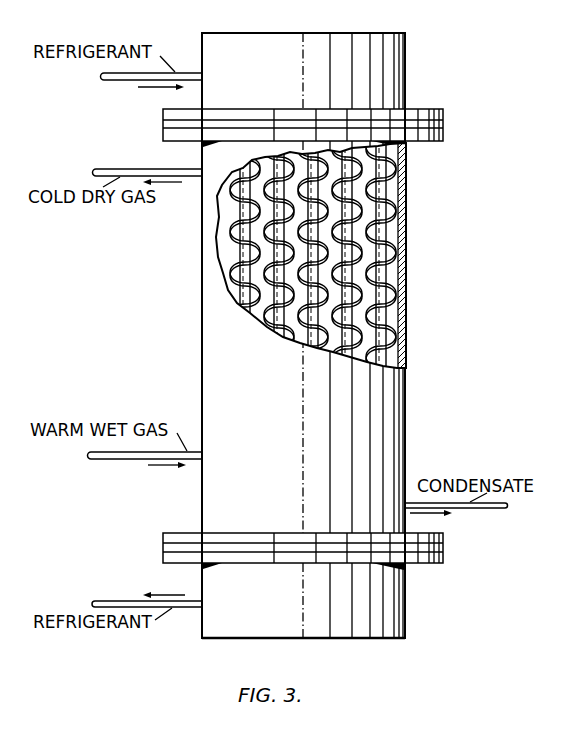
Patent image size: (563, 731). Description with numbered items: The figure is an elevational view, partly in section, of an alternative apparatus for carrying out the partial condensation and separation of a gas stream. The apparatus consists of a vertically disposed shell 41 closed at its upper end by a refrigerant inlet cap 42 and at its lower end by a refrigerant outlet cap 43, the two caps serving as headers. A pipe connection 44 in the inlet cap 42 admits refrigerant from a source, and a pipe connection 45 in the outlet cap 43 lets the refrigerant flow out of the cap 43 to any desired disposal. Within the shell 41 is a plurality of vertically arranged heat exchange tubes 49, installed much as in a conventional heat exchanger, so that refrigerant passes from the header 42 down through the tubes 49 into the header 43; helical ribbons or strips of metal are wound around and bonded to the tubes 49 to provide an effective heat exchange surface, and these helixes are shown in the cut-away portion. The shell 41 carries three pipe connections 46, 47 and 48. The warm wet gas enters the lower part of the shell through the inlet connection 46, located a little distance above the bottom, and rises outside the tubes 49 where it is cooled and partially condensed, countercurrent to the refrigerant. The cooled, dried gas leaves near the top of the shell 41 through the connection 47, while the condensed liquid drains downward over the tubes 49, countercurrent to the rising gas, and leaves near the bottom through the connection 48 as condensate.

The shell 41 is at (201, 325).
The refrigerant inlet cap 42 is at (404, 34).
The refrigerant outlet cap 43 is at (385, 639).
The pipe connection 44 is at (121, 81).
The pipe connection 45 is at (111, 600).
The pipe connection 46 is at (110, 460).
The pipe connection 47 is at (134, 169).
The pipe connection 48 is at (470, 508).
The heat exchange tubes 49 is at (273, 326).